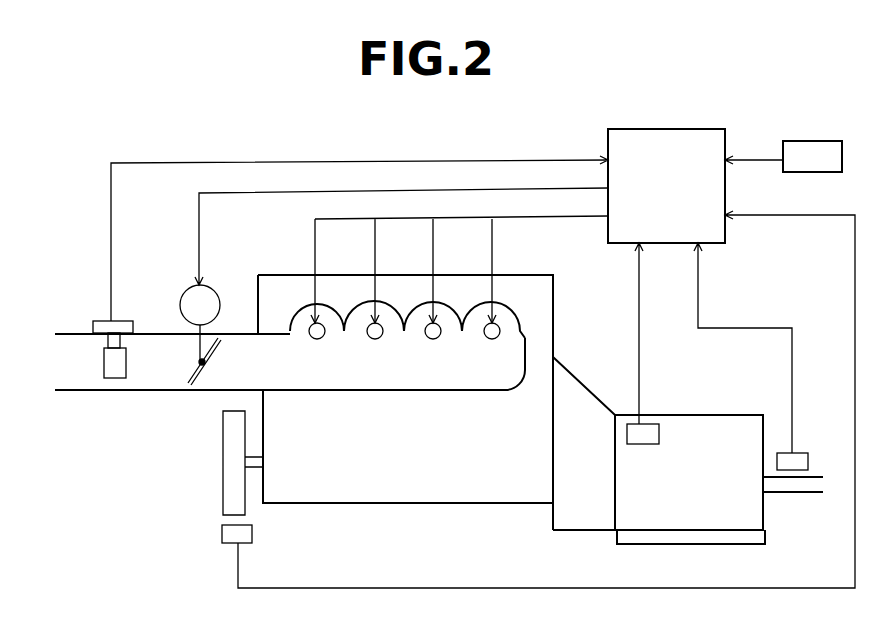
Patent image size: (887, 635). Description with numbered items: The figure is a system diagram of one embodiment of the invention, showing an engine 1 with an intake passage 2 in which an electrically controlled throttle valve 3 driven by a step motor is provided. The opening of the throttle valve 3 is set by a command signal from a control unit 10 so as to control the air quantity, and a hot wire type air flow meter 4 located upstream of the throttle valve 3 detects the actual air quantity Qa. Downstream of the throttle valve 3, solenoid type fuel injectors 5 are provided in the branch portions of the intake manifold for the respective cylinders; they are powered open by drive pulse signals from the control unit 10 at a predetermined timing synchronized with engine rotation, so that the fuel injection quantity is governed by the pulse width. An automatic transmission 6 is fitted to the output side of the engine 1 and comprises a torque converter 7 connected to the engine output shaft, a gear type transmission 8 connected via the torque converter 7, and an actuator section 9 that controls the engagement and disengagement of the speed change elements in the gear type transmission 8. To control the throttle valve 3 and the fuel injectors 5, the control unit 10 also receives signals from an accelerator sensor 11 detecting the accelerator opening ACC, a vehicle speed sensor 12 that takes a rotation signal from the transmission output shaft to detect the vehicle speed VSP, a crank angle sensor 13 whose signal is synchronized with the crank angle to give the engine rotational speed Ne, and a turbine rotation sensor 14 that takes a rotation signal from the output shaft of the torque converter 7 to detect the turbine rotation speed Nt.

The engine 1 is at (351, 512).
The intake passage 2 is at (138, 393).
The throttle valve 3 is at (178, 301).
The air flow meter 4 is at (98, 320).
The fuel injectors 5 is at (312, 325).
The automatic transmission 6 is at (670, 407).
The torque converter 7 is at (584, 443).
The gear type transmission 8 is at (752, 485).
The actuator section 9 is at (710, 536).
The control unit 10 is at (642, 127).
The accelerator sensor 11 is at (806, 140).
The vehicle speed sensor 12 is at (800, 452).
The crank angle sensor 13 is at (222, 533).
The turbine rotation sensor 14 is at (637, 423).